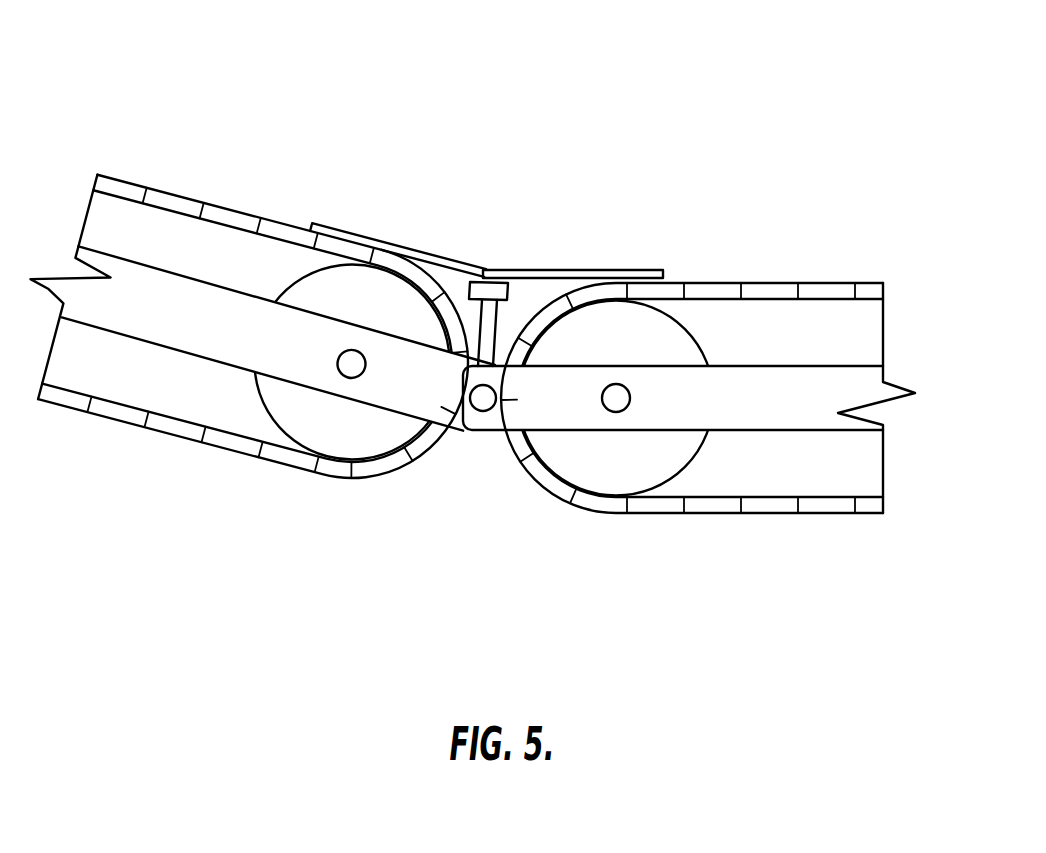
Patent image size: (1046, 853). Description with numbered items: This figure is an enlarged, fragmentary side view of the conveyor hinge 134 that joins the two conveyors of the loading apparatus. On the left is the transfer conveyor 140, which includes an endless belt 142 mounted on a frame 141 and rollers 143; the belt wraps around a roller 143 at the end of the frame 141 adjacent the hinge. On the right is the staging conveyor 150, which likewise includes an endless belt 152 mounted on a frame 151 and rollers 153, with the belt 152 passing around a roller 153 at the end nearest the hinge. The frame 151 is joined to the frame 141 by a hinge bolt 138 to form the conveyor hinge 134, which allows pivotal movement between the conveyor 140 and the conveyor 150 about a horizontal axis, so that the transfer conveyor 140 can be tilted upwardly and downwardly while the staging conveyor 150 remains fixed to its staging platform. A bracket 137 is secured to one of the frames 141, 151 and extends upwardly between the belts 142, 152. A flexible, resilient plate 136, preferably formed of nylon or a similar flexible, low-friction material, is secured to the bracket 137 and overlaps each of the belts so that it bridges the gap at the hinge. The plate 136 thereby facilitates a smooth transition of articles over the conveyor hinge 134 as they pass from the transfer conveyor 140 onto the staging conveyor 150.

The conveyor hinge 134 is at (564, 292).
The flexible, resilient plate 136 is at (567, 270).
The bracket 137 is at (482, 282).
The hinge bolt 138 is at (483, 398).
The transfer conveyor 140 is at (273, 348).
The frame 141 is at (172, 310).
The endless belt 142 is at (135, 183).
The rollers 143 is at (352, 435).
The staging conveyor 150 is at (689, 388).
The frame 151 is at (765, 403).
The endless belt 152 is at (720, 287).
The rollers 153 is at (615, 453).